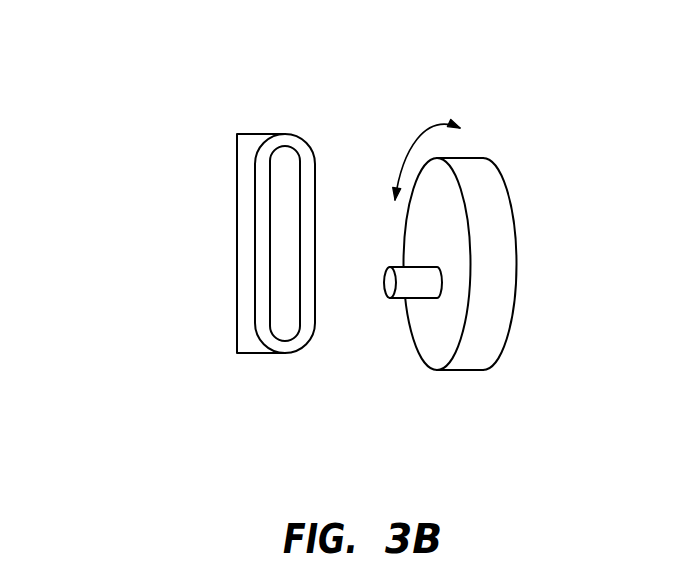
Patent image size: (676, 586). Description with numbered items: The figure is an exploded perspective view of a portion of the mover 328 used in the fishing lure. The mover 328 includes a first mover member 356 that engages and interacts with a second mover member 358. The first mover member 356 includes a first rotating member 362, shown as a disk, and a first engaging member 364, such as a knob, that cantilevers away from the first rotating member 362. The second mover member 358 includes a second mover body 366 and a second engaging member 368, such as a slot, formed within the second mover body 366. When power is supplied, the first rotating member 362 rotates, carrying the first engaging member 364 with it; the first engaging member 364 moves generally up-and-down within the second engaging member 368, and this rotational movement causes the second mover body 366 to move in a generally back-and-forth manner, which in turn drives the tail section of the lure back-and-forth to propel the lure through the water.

The mover 328 is at (170, 102).
The second mover member 358 is at (245, 321).
The second mover body 366 is at (252, 139).
The second engaging member 368 is at (287, 148).
The first mover member 356 is at (500, 282).
The first rotating member 362 is at (500, 240).
The first engaging member 364 is at (417, 290).